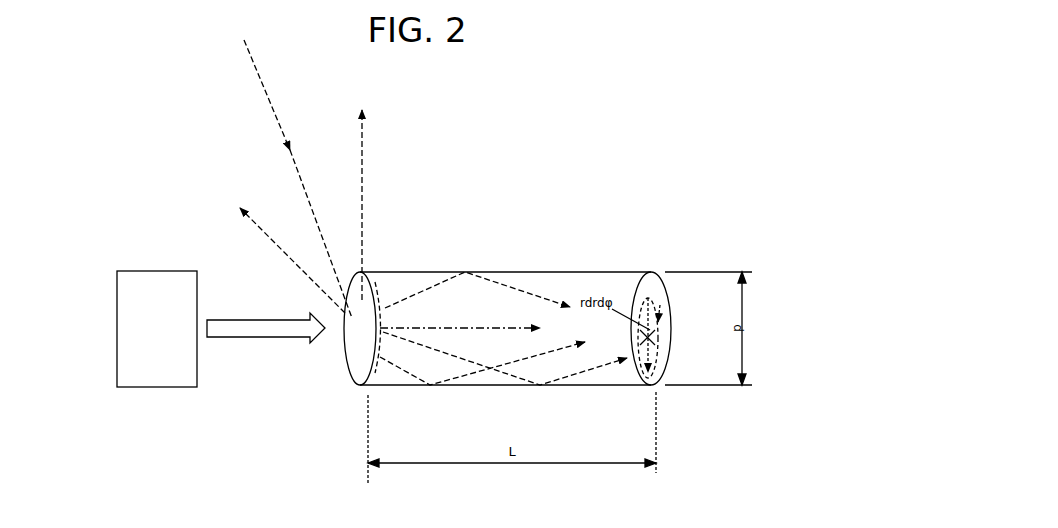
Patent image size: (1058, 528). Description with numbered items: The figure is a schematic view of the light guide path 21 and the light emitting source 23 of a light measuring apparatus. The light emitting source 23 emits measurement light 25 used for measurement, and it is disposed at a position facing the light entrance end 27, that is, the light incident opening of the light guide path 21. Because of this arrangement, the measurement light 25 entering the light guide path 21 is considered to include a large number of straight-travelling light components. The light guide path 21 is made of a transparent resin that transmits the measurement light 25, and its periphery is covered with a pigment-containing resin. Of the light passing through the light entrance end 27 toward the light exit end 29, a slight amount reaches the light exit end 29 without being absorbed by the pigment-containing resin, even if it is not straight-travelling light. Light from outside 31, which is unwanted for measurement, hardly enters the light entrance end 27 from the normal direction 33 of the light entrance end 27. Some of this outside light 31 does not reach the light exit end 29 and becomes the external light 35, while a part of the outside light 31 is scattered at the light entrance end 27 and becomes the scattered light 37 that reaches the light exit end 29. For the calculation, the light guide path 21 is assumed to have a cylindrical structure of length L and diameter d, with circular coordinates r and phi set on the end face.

The light guide path 21 is at (563, 270).
The light emitting source 23 is at (140, 363).
The measurement light 25 is at (240, 332).
The light entrance end 27 is at (348, 372).
The light exit end 29 is at (655, 288).
The light from outside 31 is at (257, 67).
The normal direction 33 is at (480, 328).
The external light 35 is at (268, 236).
The scattered light 37 is at (587, 387).